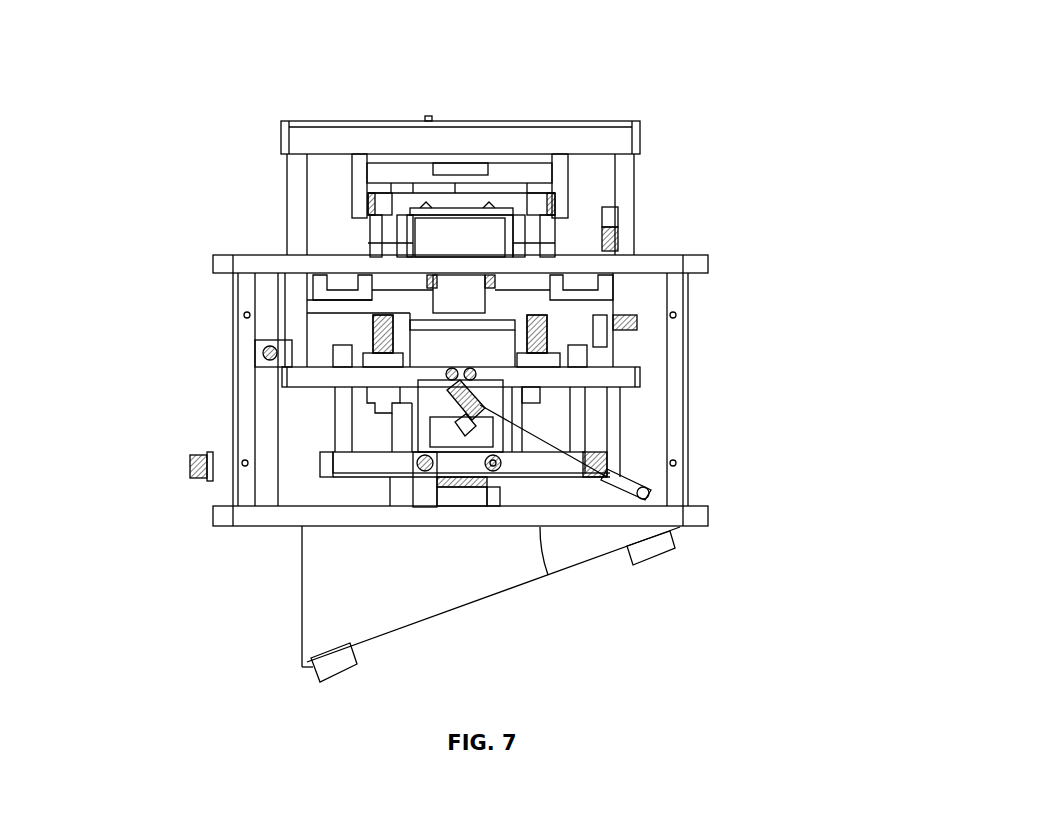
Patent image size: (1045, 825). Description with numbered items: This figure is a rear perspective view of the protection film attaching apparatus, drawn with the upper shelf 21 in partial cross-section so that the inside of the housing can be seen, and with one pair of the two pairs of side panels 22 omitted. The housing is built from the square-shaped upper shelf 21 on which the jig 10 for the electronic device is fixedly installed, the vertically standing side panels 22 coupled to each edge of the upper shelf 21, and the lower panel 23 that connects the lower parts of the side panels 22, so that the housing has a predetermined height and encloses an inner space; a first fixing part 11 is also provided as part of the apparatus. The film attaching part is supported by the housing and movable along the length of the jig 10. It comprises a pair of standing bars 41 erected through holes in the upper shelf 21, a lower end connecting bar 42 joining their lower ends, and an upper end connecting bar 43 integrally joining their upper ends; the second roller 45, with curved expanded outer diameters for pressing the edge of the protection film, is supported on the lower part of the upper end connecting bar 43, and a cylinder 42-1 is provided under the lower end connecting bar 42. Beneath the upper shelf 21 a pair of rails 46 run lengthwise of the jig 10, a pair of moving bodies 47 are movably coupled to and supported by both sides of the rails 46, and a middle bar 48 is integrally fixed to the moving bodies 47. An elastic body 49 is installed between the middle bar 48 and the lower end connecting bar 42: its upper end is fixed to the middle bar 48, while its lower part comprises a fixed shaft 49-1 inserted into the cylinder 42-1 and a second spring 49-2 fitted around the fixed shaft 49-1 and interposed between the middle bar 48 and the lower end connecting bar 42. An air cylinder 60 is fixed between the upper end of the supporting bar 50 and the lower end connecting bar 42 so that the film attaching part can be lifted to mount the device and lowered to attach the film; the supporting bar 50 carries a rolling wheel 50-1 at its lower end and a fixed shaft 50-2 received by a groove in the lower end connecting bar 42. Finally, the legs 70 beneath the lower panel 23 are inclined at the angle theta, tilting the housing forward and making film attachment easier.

The jig 10 is at (368, 242).
The first fixing part 11 is at (430, 202).
The upper shelf 21 is at (283, 267).
The side panels 22 is at (227, 367).
The lower panel 23 is at (300, 517).
The standing bars 41 is at (640, 182).
The lower end connecting bar 42 is at (640, 380).
The cylinder 42-1 is at (393, 402).
The upper end connecting bar 43 is at (597, 127).
The second roller 45 is at (457, 197).
The rails 46 is at (583, 287).
The moving bodies 47 is at (608, 293).
The middle bar 48 is at (407, 310).
The elastic body 49 is at (841, 305).
The fixed shaft 49-1 is at (590, 332).
The second spring 49-2 is at (600, 378).
The supporting bar 50 is at (357, 462).
The rolling wheel 50-1 is at (428, 490).
The fixed shaft 50-2 is at (577, 415).
The air cylinder 60 is at (640, 497).
The legs 70 is at (387, 578).